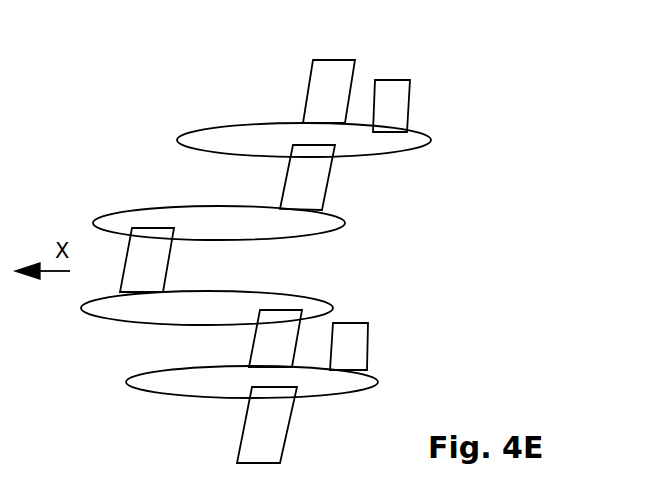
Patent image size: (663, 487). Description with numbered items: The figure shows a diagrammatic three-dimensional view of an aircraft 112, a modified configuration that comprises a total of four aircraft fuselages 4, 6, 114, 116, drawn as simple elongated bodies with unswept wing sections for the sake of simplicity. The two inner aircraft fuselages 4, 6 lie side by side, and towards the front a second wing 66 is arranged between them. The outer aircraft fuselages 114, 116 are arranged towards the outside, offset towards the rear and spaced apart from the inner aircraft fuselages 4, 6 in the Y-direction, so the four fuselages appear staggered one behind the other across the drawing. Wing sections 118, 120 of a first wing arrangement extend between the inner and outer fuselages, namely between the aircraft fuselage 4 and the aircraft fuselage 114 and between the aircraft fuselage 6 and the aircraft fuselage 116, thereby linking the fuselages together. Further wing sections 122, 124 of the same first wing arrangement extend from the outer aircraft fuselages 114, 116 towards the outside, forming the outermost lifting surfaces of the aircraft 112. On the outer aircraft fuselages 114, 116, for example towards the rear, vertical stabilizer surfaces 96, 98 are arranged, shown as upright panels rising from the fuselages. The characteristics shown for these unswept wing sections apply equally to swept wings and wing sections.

The aircraft fuselage 4 is at (155, 313).
The aircraft fuselage 6 is at (192, 222).
The second wing 66 is at (150, 274).
The vertical stabilizer surface 96 is at (355, 352).
The vertical stabilizer surface 98 is at (395, 110).
The aircraft 112 is at (106, 150).
The aircraft fuselage 114 is at (185, 387).
The aircraft fuselage 116 is at (223, 138).
The wing section 118 is at (267, 344).
The wing section 120 is at (312, 180).
The wing section 122 is at (257, 441).
The wing section 124 is at (325, 82).